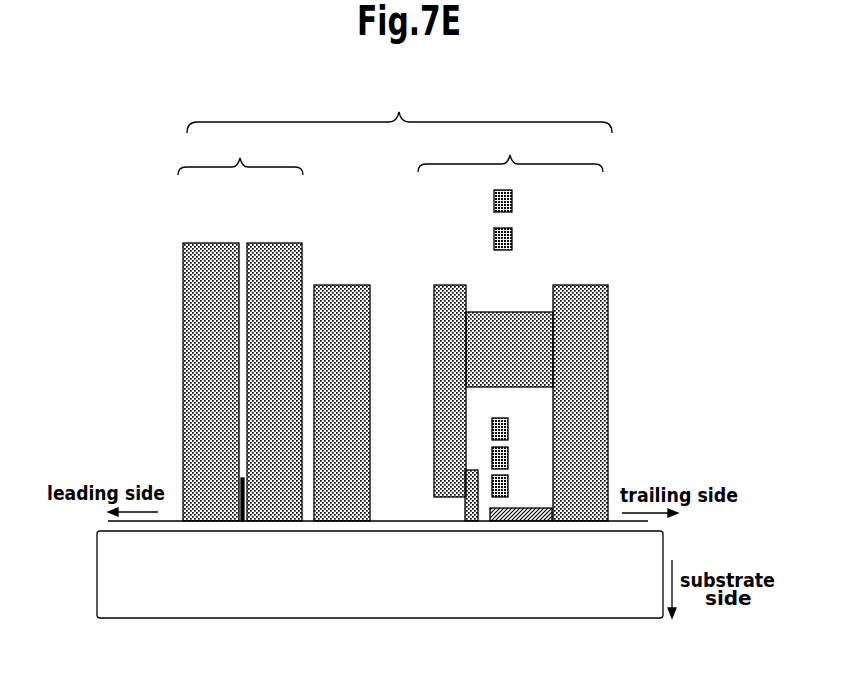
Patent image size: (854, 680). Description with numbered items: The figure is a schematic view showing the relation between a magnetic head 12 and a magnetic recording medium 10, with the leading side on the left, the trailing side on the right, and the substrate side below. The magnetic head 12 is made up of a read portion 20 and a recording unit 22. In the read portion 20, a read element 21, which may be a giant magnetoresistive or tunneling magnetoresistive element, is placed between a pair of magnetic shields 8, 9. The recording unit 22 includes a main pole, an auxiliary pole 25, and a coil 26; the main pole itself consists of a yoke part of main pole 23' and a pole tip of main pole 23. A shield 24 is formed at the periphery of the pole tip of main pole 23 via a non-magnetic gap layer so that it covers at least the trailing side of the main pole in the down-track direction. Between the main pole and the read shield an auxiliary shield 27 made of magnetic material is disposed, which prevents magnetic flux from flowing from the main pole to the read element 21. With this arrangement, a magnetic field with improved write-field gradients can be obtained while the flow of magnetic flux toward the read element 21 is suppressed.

The magnetic recording medium 10 is at (113, 575).
The magnetic head 12 is at (399, 104).
The read portion 20 is at (240, 154).
The recording unit 22 is at (510, 150).
The magnetic shield 8 is at (205, 252).
The magnetic shield 9 is at (266, 252).
The auxiliary shield 27 is at (336, 296).
The read element 21 is at (242, 490).
The yoke part of main pole 23' is at (458, 376).
The pole tip of main pole 23 is at (509, 363).
The auxiliary pole 25 is at (580, 296).
The coil 26 is at (513, 205).
The shield 24 is at (522, 508).